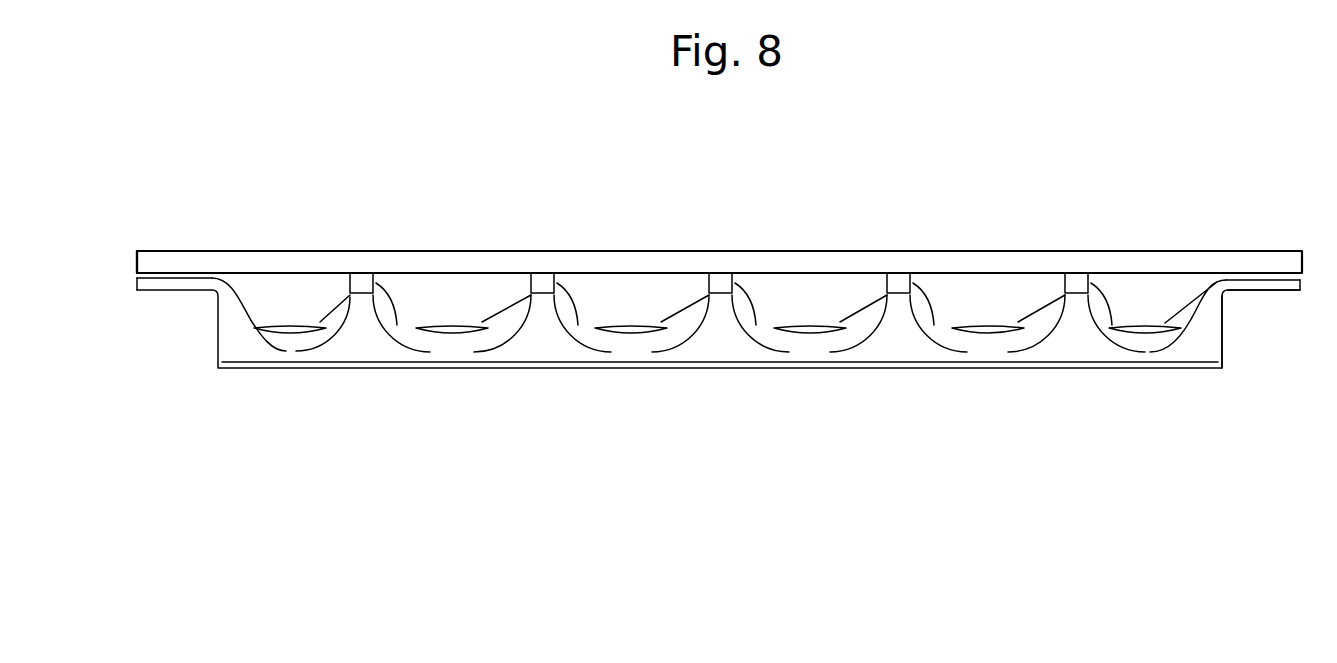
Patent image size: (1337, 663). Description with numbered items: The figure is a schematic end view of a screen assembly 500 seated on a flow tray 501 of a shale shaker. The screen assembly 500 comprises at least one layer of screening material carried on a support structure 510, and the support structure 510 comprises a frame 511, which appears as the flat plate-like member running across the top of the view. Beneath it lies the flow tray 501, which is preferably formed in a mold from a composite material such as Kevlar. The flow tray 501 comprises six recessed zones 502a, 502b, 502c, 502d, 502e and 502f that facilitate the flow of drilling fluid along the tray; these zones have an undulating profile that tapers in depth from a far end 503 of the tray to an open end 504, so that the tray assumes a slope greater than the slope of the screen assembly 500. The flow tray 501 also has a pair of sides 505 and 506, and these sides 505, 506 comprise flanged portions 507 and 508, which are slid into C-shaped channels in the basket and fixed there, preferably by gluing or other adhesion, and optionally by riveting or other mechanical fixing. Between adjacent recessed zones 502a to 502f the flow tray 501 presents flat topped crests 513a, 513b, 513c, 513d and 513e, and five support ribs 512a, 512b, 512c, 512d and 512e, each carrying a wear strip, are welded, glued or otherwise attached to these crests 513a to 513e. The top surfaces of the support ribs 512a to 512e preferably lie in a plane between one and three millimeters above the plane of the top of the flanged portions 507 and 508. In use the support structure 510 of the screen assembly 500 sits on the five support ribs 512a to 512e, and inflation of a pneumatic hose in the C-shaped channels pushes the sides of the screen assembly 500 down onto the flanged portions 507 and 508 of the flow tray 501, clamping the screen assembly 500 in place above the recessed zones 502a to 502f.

The screen assembly 500 is at (611, 242).
The flow tray 501 is at (1013, 370).
The recessed zone 502a is at (290, 308).
The recessed zone 502b is at (452, 308).
The recessed zone 502c is at (631, 308).
The recessed zone 502d is at (810, 308).
The recessed zone 502e is at (988, 308).
The recessed zone 502f is at (1147, 312).
The far end 503 is at (1187, 312).
The open end 504 is at (1195, 348).
The side 505 is at (182, 292).
The side 506 is at (1240, 295).
The flanged portion 507 is at (137, 290).
The flanged portion 508 is at (1303, 282).
The support structure 510 is at (477, 274).
The frame 511 is at (136, 262).
The support rib 512a is at (396, 326).
The support rib 512b is at (578, 326).
The support rib 512c is at (756, 326).
The support rib 512d is at (934, 326).
The support rib 512e is at (1112, 326).
The flat topped crest 513a is at (347, 283).
The flat topped crest 513b is at (528, 283).
The flat topped crest 513c is at (706, 283).
The flat topped crest 513d is at (884, 283).
The flat topped crest 513e is at (1062, 283).